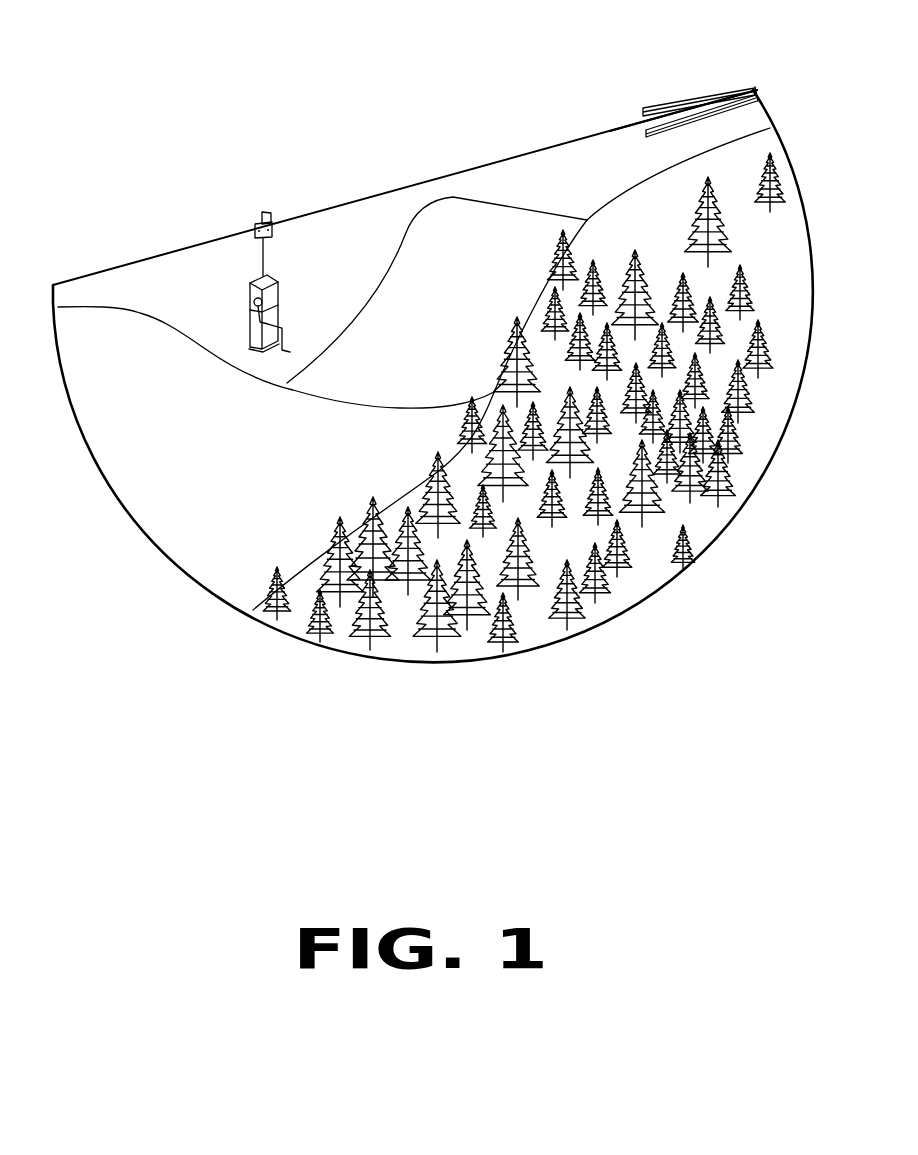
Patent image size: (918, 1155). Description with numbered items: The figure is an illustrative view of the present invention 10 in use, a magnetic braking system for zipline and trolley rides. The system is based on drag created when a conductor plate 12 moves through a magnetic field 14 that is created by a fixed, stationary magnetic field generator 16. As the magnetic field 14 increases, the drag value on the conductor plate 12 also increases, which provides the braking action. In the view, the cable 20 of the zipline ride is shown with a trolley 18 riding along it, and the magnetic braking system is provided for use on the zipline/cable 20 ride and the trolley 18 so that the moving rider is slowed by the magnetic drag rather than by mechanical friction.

The present invention 10 is at (126, 94).
The conductor plate 12 is at (243, 212).
The magnetic field 14 is at (627, 118).
The magnetic field generator 16 is at (742, 96).
The trolley 18 is at (256, 236).
The zipline/cable 20 is at (362, 202).